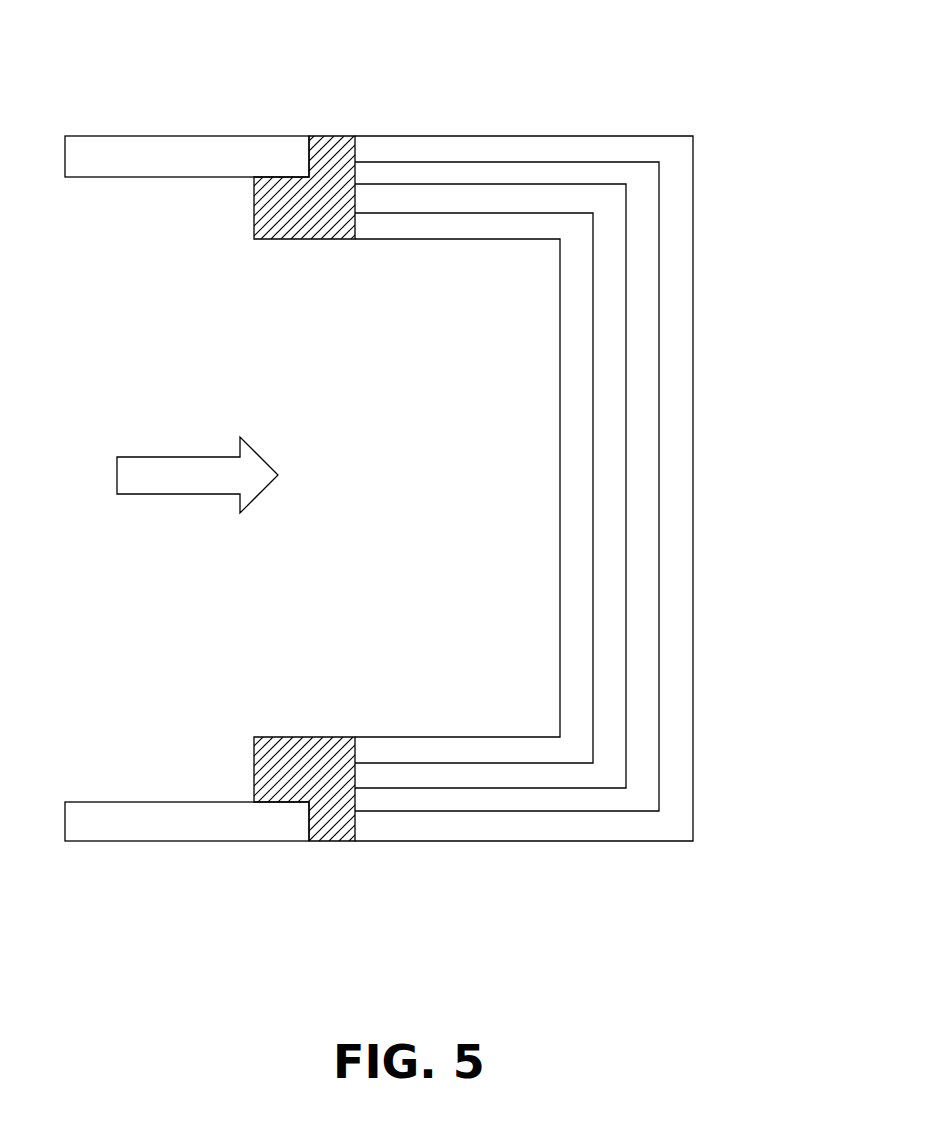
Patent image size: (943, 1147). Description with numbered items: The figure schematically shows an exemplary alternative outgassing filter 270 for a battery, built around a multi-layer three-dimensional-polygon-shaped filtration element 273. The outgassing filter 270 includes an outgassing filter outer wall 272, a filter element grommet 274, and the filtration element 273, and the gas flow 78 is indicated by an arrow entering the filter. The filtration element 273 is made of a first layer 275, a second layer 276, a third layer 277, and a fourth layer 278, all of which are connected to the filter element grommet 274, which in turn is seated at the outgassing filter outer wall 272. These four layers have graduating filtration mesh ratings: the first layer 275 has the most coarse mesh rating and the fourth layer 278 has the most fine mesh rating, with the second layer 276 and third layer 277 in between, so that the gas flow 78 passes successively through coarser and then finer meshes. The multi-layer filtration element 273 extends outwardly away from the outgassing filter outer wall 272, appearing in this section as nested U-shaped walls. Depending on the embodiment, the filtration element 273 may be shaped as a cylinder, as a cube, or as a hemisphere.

The gas flow 78 is at (200, 455).
The outgassing filter 270 is at (251, 136).
The outgassing filter outer wall 272 is at (156, 136).
The multi-layer three-dimensional-polygon-shaped filtration element 273 is at (522, 136).
The filter element grommet 274 is at (337, 162).
The first layer 275 is at (573, 513).
The second layer 276 is at (610, 418).
The third layer 277 is at (643, 345).
The fourth layer 278 is at (677, 275).